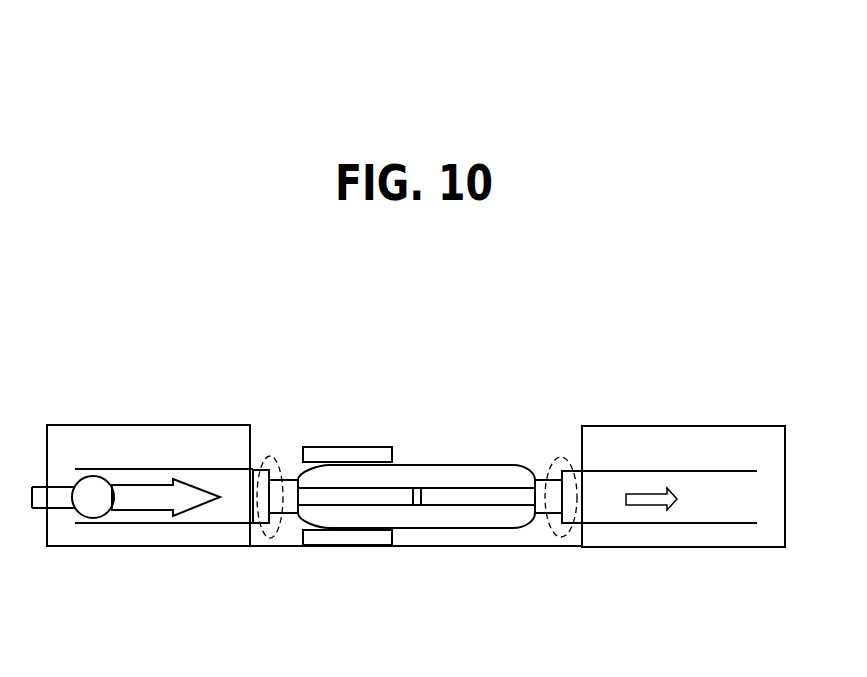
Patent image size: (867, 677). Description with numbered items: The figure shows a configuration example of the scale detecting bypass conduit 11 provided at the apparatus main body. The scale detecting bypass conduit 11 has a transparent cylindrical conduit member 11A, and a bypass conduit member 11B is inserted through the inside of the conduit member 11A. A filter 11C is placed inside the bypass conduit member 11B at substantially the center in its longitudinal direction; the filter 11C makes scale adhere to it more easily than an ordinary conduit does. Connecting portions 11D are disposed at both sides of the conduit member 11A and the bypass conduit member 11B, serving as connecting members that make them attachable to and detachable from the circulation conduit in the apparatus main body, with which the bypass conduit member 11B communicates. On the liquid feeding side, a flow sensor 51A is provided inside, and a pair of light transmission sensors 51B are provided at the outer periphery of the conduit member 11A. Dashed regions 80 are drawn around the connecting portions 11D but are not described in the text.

The scale detecting bypass conduit 11 is at (420, 482).
The conduit member 11A is at (478, 465).
The bypass conduit member 11B is at (483, 505).
The filter 11C is at (414, 507).
The connecting portion 11D is at (293, 515).
The flow sensor 51A is at (98, 518).
The light transmission sensor 51B is at (329, 453).
The seal portion 80 is at (258, 534).